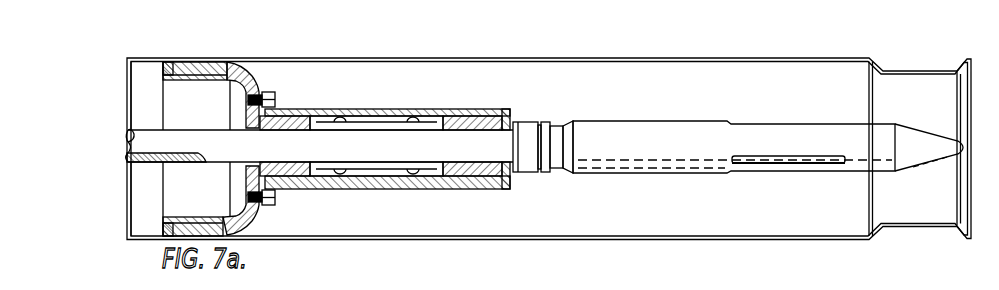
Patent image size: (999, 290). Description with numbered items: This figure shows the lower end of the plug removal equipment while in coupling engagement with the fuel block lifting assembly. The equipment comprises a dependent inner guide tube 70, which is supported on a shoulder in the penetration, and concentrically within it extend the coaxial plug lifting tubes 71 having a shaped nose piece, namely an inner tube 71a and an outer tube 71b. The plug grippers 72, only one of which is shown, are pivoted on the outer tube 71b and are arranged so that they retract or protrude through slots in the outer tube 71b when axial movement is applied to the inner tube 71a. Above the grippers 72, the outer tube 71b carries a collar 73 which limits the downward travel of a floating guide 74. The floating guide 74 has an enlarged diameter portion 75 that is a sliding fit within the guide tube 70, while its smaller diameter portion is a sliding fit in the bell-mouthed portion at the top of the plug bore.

The inner guide tube 70 is at (628, 235).
The plug lifting tubes 71 is at (713, 152).
The inner tube 71a is at (123, 158).
The outer tube 71b is at (137, 168).
The plug grippers 72 is at (828, 160).
The collar 73 is at (533, 173).
The floating guide 74 is at (402, 110).
The enlarged diameter portion 75 is at (248, 68).